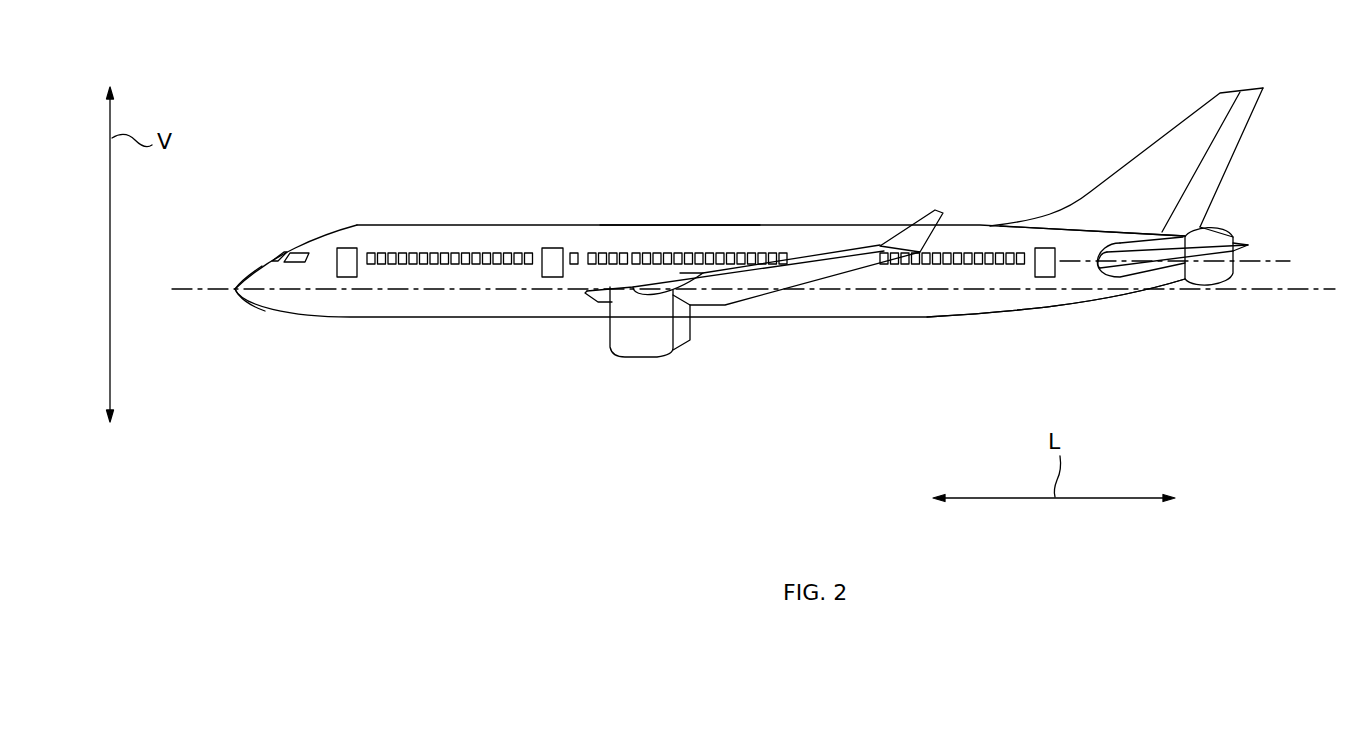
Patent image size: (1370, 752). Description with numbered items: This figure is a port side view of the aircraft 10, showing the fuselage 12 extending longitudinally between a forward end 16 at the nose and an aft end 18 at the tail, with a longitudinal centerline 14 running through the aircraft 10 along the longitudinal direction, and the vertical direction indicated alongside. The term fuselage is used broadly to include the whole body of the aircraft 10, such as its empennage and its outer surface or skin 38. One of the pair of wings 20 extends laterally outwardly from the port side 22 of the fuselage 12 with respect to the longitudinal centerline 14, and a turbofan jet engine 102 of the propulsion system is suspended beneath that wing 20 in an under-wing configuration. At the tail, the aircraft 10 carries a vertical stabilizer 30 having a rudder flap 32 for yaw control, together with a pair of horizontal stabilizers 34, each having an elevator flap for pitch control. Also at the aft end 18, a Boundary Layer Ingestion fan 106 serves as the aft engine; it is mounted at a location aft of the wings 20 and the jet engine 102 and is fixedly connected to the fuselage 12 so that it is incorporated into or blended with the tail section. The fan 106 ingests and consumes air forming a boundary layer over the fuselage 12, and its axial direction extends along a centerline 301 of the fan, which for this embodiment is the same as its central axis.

The aircraft 10 is at (297, 96).
The fuselage 12 is at (302, 302).
The longitudinal centerline 14 is at (190, 285).
The forward end 16 is at (233, 298).
The aft end 18 is at (1127, 295).
The wings 20 is at (720, 298).
The port side 22 is at (933, 312).
The vertical stabilizer 30 is at (1187, 120).
The rudder flap 32 is at (1240, 122).
The horizontal stabilizers 34 is at (1175, 255).
The outer surface or skin 38 is at (660, 205).
The turbofan jet engine 102 is at (628, 357).
The Boundary Layer Ingestion (BLI) fan 106 is at (1228, 215).
The centerline 301 is at (1082, 262).